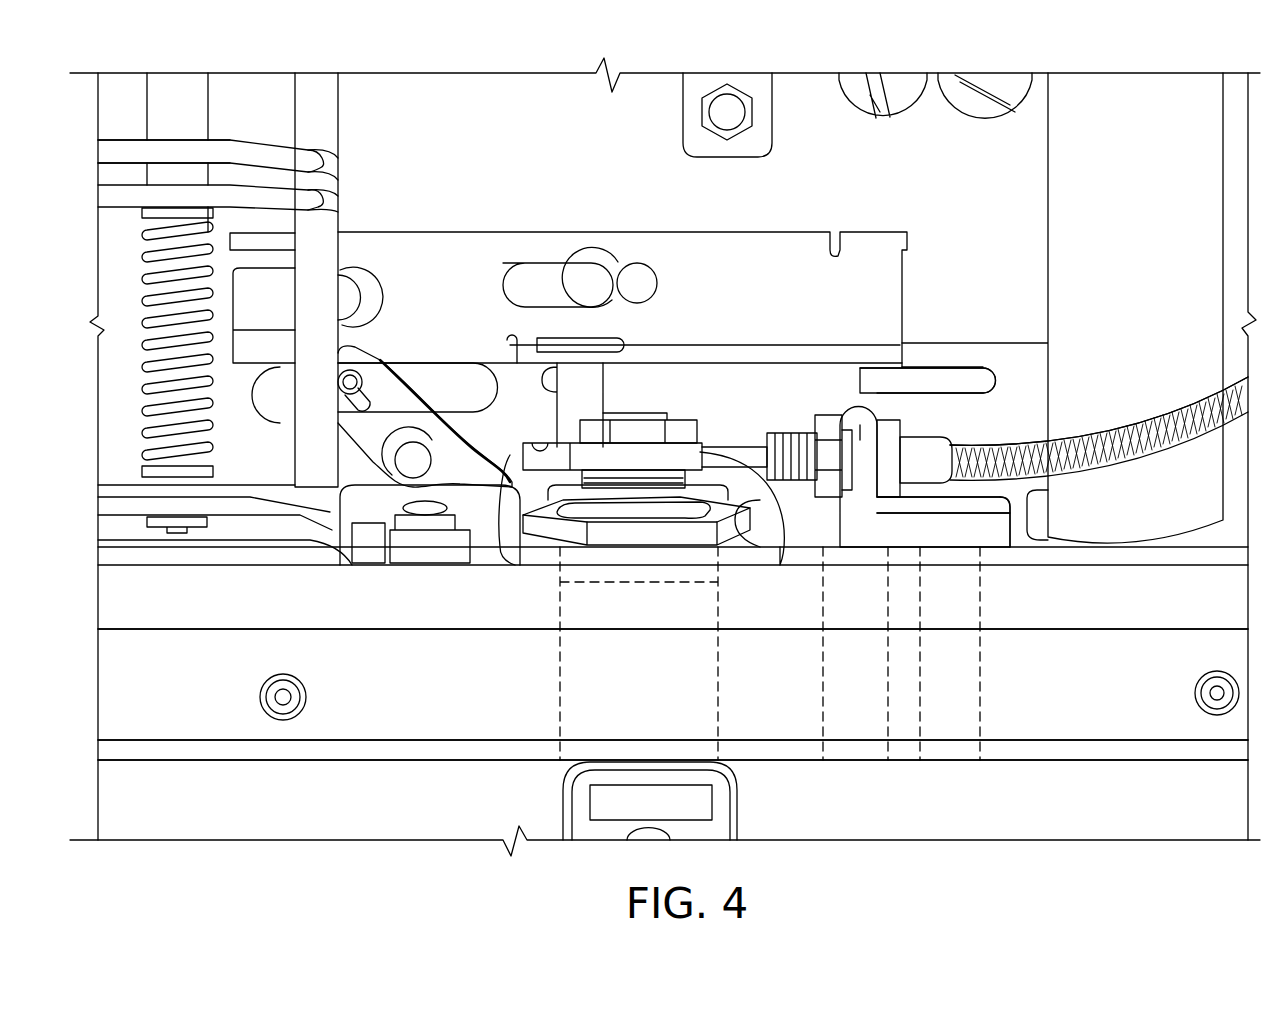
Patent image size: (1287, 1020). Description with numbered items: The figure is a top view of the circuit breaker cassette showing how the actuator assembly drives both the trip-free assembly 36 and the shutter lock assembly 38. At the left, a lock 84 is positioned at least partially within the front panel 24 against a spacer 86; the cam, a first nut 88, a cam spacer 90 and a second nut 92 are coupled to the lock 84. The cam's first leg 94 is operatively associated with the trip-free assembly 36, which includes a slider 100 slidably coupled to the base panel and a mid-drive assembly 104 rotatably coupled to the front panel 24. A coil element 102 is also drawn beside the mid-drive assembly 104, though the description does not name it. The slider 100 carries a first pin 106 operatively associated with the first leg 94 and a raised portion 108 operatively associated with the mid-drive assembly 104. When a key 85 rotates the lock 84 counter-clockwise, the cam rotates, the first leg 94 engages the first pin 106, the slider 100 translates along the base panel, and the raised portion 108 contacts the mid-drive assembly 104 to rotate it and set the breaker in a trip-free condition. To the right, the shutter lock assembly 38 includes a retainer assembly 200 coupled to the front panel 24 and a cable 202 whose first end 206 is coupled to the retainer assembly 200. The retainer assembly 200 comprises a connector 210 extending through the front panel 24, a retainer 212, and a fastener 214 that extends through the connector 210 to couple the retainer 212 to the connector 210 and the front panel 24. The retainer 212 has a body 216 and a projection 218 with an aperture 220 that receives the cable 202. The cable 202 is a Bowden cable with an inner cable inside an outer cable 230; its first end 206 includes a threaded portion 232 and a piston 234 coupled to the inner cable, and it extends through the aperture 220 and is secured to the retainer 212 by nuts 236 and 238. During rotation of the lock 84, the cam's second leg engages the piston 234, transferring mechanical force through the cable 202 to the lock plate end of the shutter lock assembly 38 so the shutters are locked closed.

The front panel 24 is at (975, 757).
The trip-free assembly 36 is at (432, 115).
The shutter lock assembly 38 is at (998, 302).
The lock 84 is at (695, 708).
The key 85 is at (575, 828).
The spacer 86 is at (600, 573).
The first nut 88 is at (552, 530).
The cam spacer 90 is at (503, 565).
The second nut 92 is at (683, 433).
The first leg 94 is at (543, 447).
The slider 100 is at (497, 247).
The spring 102 is at (262, 300).
The mid-drive assembly 104 is at (320, 256).
The first pin 106 is at (593, 393).
The raised portion 108 is at (262, 243).
The retainer assembly 200 is at (995, 562).
The cable 202 is at (1158, 455).
The first end 206 is at (952, 430).
The connector 210 is at (857, 720).
The retainer 212 is at (1008, 532).
The fastener 214 is at (920, 712).
The body 216 is at (952, 530).
The projection 218 is at (893, 440).
The aperture 220 is at (848, 410).
The outer cable 230 is at (1177, 425).
The threaded portion 232 is at (795, 440).
The piston 234 is at (708, 495).
The nut 236 is at (825, 415).
The nut 238 is at (897, 425).